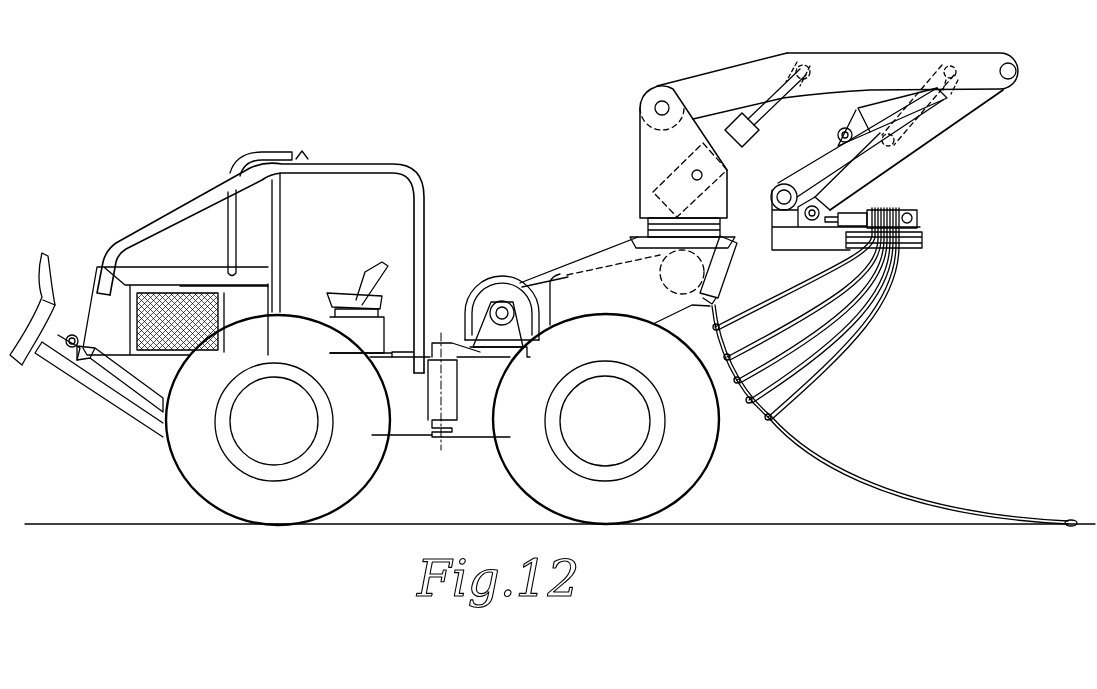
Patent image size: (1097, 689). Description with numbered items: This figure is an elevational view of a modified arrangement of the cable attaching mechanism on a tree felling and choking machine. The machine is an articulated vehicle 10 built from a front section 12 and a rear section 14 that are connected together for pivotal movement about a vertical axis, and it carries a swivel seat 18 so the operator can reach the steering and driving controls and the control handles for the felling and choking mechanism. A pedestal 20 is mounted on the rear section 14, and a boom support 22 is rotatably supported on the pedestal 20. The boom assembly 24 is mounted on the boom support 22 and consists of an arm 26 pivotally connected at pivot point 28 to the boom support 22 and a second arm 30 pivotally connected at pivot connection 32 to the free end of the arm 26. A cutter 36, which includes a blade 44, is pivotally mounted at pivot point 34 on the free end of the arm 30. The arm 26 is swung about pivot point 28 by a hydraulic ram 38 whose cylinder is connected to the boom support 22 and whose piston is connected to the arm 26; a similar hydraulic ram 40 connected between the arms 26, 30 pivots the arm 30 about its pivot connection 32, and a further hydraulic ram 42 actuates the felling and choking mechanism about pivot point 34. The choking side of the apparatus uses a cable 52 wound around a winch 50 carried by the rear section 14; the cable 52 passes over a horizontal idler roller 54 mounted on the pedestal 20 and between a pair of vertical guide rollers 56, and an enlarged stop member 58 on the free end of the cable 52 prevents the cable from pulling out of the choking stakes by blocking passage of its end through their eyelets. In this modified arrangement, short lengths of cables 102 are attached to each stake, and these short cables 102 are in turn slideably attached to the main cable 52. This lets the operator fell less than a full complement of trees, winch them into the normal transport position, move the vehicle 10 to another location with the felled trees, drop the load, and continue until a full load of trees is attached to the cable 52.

The articulated vehicle 10 is at (436, 193).
The front section 12 is at (405, 417).
The rear section 14 is at (478, 417).
The swivel seat 18 is at (344, 298).
The pedestal 20 is at (630, 252).
The boom support 22 is at (655, 163).
The boom assembly 24 is at (876, 50).
The arm 26 is at (729, 66).
The pivot point 28 is at (652, 108).
The arm 30 is at (950, 107).
The pivot connection 32 is at (1017, 72).
The pivot point 34 is at (771, 197).
The cutter 36 is at (802, 240).
The hydraulic ram 38 is at (748, 147).
The hydraulic ram 40 is at (883, 110).
The hydraulic ram 42 is at (867, 173).
The blade 44 is at (917, 237).
The winch 50 is at (498, 295).
The cable 52 is at (847, 471).
The horizontal idler roller 54 is at (663, 280).
The vertical guide rollers 56 is at (718, 273).
The stop member 58 is at (1069, 521).
The short cables 102 is at (850, 288).